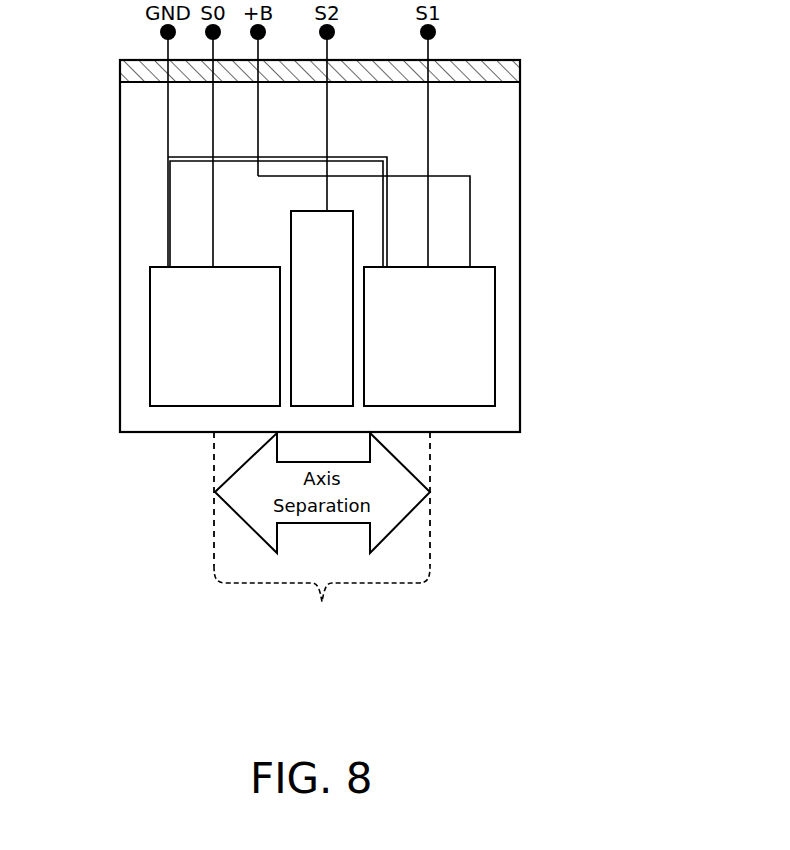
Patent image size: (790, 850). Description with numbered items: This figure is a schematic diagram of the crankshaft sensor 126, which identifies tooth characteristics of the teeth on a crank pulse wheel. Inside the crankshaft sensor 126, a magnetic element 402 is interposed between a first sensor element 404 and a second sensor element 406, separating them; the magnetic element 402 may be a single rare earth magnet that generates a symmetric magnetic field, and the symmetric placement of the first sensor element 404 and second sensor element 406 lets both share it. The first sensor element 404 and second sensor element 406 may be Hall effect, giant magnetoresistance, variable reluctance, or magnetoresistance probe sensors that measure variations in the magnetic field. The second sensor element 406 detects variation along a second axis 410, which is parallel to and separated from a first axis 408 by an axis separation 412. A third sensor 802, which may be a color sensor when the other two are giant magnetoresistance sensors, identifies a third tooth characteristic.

The crankshaft sensor 126 is at (120, 158).
The third sensor 802 is at (520, 72).
The magnetic element 402 is at (322, 308).
The first sensor element 404 is at (215, 336).
The second sensor element 406 is at (429, 336).
The first axis 408 is at (214, 537).
The second axis 410 is at (432, 535).
The axis separation 412 is at (322, 599).